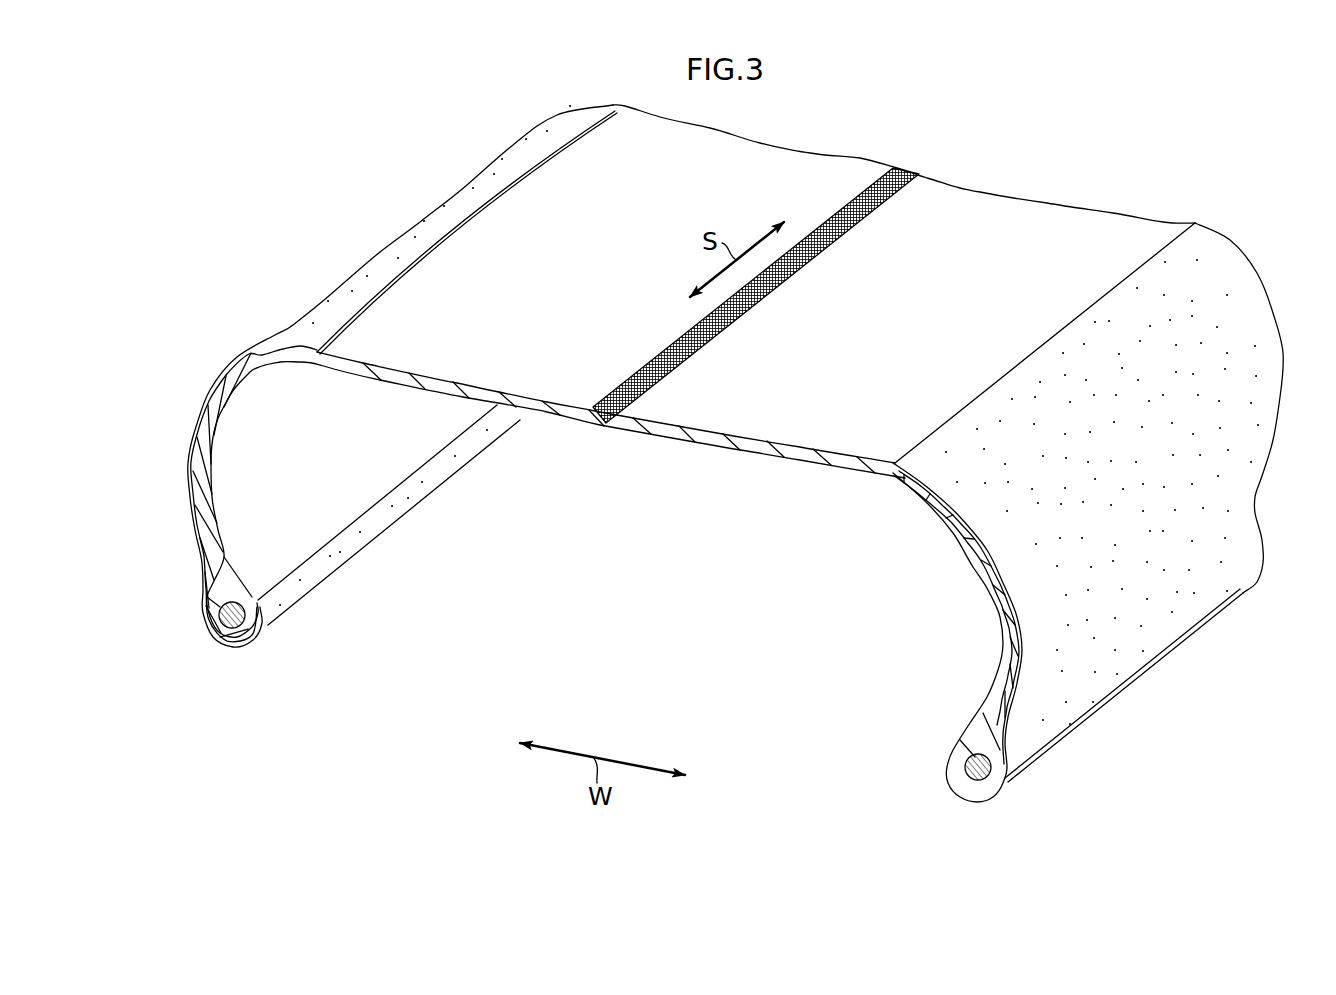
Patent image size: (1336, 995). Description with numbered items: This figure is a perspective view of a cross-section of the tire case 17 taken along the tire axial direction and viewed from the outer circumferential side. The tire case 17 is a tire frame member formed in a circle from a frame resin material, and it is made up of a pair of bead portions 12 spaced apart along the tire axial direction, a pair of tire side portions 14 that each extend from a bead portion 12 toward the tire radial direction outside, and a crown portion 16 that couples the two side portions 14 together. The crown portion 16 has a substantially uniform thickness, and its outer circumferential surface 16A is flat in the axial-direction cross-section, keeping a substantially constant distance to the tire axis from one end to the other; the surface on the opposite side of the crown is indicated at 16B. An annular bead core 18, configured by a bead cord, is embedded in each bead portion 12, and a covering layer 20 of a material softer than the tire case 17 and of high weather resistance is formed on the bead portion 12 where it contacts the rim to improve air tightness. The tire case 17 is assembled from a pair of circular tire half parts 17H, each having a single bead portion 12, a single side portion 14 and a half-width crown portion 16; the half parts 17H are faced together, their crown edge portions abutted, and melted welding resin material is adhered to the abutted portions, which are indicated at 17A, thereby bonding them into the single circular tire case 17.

The bead portion 12 is at (243, 650).
The tire side portion 14 is at (213, 463).
The crown portion 16 is at (581, 471).
The outer circumferential surface 16A is at (548, 402).
The belt lower surface 16B is at (558, 418).
The tire case 17 is at (337, 242).
The bonded portion 17A is at (628, 378).
The tire half part 17H is at (428, 375).
The bead core 18 is at (207, 604).
The covering layer 20 is at (188, 490).